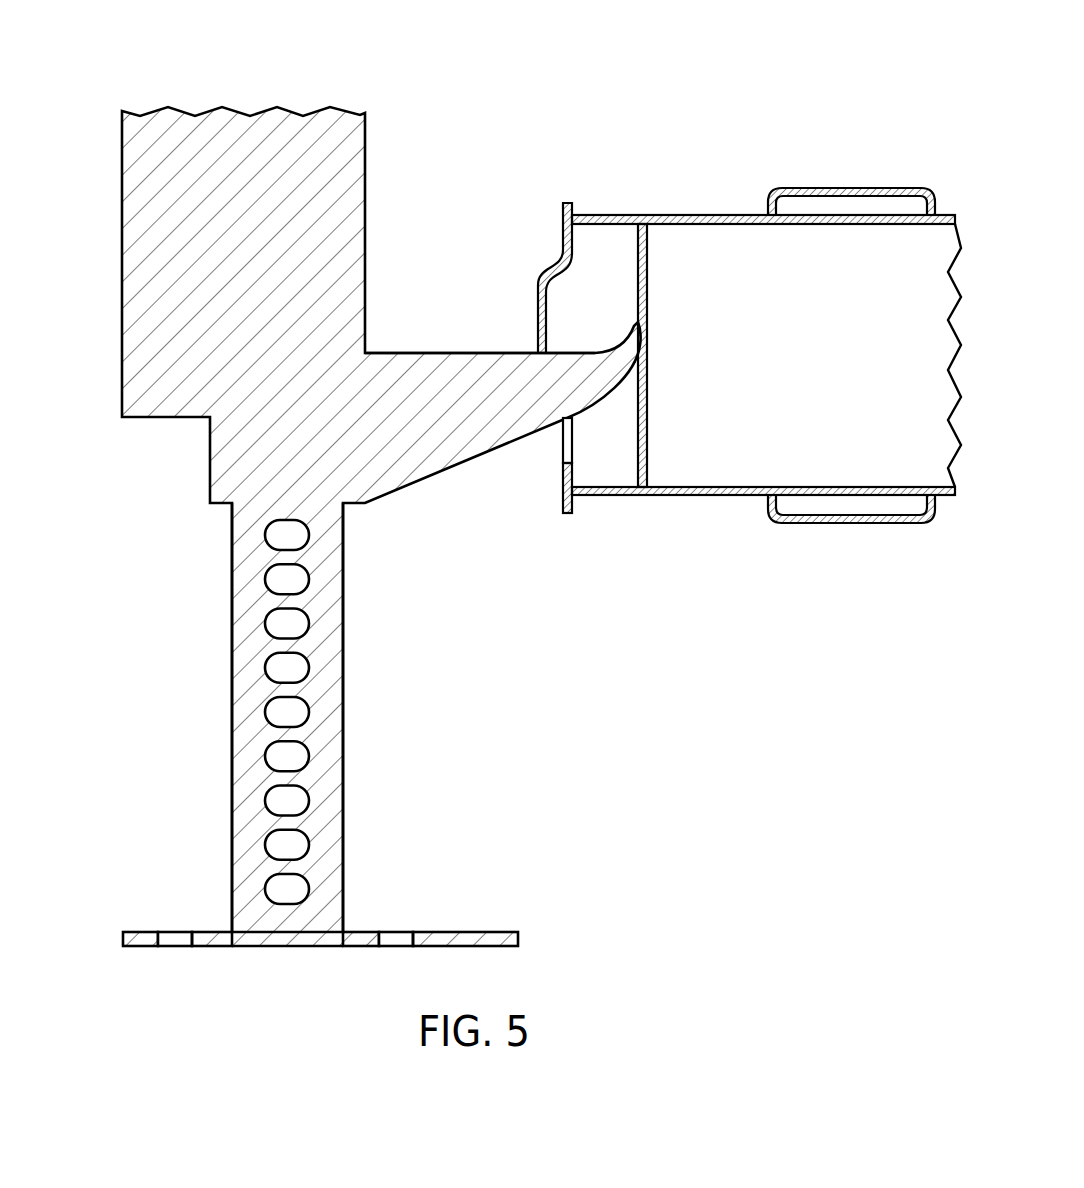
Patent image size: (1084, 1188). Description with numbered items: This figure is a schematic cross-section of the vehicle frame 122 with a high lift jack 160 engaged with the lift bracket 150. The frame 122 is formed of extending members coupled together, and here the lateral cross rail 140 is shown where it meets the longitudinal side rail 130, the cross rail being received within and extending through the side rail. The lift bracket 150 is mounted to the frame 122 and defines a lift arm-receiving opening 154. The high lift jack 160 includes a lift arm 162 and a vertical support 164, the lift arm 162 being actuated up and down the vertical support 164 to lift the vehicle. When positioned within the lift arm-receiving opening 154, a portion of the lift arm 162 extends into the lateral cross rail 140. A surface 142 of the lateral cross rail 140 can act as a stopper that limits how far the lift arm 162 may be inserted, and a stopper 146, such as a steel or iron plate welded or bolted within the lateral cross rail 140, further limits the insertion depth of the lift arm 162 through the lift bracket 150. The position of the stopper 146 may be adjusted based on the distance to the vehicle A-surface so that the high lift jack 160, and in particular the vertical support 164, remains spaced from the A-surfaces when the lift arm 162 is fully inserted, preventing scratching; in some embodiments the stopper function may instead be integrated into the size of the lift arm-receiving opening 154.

The frame 122 is at (851, 436).
The longitudinal side rail 130 is at (864, 364).
The lateral cross rail 140 is at (719, 274).
The surface 142 is at (763, 299).
The stopper 146 is at (674, 318).
The lift bracket 150 is at (533, 228).
The lift arm-receiving opening 154 is at (528, 473).
The high lift jack 160 is at (342, 487).
The lift arm 162 is at (480, 298).
The vertical support 164 is at (234, 717).